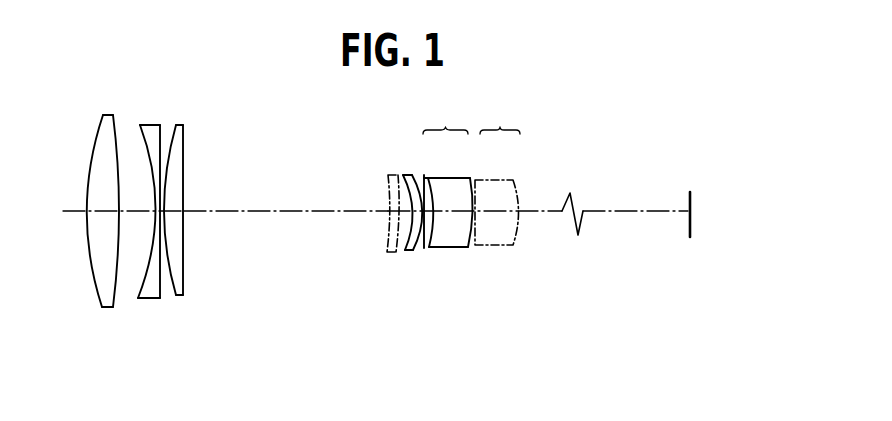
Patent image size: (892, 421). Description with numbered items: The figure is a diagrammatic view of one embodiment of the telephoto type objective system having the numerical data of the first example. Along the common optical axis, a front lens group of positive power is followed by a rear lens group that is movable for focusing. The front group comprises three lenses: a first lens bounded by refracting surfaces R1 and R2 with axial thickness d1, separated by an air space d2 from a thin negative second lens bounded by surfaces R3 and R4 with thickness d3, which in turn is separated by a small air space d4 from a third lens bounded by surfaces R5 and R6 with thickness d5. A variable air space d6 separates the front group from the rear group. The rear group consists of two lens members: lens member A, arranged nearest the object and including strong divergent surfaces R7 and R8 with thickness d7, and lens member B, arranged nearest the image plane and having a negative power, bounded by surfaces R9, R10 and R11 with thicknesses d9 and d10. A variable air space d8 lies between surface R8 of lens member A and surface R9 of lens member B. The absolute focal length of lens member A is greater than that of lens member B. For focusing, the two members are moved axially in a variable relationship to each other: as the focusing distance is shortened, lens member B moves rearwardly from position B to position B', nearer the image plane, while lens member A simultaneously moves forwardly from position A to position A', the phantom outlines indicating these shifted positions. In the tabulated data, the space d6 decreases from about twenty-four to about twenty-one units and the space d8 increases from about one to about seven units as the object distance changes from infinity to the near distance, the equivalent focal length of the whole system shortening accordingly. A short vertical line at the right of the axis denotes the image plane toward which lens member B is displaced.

The axial thickness of the first lens d1 is at (104, 211).
The air space between first and second lenses d2 is at (142, 211).
The axial thickness of the second lens d3 is at (155, 208).
The air space between second and third lenses d4 is at (157, 216).
The axial thickness of the third lens d5 is at (173, 210).
The variable air space between front and rear lens groups d6 is at (286, 200).
The axial thickness of lens member A d7 is at (410, 188).
The variable air space between lens members A and B d8 is at (424, 166).
The axial thickness of the first element of lens member B d9 is at (434, 178).
The axial thickness of the second element of lens member B d10 is at (449, 212).
The first refracting surface R1 is at (101, 306).
The second refracting surface R2 is at (113, 309).
The third refracting surface R3 is at (137, 300).
The fourth refracting surface R4 is at (160, 299).
The fifth refracting surface R5 is at (176, 296).
The sixth refracting surface R6 is at (185, 296).
The seventh refracting surface R7 is at (405, 251).
The eighth refracting surface R8 is at (414, 251).
The ninth refracting surface R9 is at (425, 249).
The tenth refracting surface R10 is at (437, 248).
The eleventh refracting surface R11 is at (466, 248).
The lens member A is at (411, 177).
The shifted position of lens member A A' is at (392, 178).
The lens member B is at (445, 119).
The shifted position of lens member B B' is at (497, 175).